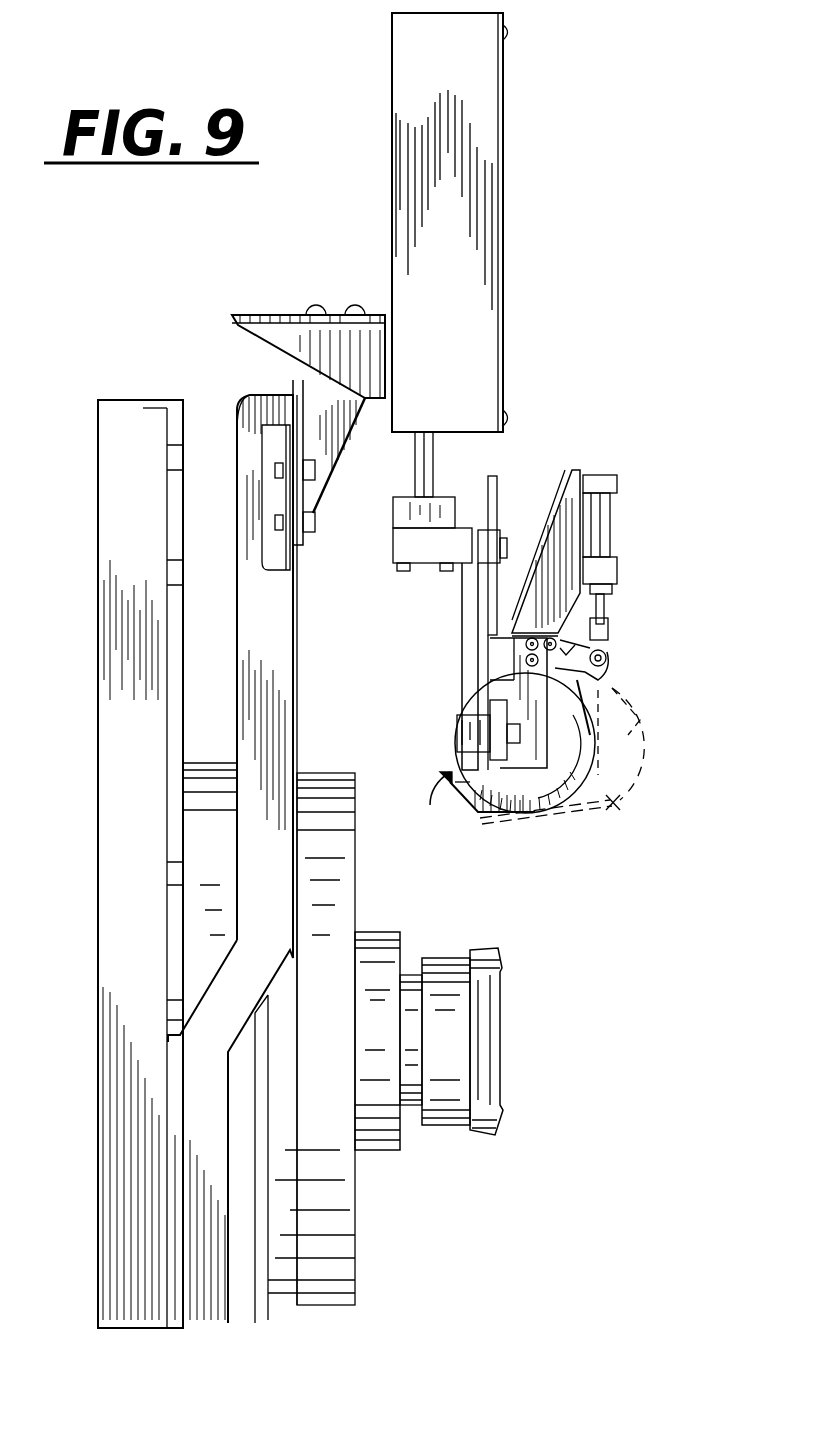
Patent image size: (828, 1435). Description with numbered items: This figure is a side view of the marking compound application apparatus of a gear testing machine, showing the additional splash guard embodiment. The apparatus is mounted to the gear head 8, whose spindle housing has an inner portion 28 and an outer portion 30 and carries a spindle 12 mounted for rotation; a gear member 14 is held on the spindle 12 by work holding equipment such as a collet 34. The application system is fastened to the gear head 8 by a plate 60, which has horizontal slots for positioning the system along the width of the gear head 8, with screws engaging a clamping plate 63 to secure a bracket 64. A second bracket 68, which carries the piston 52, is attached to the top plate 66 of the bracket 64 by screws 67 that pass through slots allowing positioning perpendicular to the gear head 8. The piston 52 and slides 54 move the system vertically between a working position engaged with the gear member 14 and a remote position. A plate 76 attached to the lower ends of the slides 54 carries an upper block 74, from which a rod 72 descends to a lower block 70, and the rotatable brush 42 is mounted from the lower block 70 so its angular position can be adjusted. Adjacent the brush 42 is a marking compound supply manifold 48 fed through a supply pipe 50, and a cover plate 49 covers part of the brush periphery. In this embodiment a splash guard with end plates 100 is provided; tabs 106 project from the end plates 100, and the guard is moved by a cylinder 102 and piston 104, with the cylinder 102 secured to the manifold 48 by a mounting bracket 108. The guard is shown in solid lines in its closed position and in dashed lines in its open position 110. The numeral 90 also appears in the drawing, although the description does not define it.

The gear head 8 is at (118, 527).
The spindle 12 is at (378, 1152).
The gear member 14 is at (503, 1085).
The inner portion 28 is at (210, 778).
The outer portion 30 is at (340, 778).
The collet 34 is at (447, 1125).
The rotatable brush 42 is at (430, 802).
The marking compound supply manifold 48 is at (445, 775).
The cover plate 49 is at (618, 803).
The supply pipe 50 is at (500, 494).
The piston 52 is at (483, 330).
The slides 54 is at (415, 468).
The plate 60 is at (290, 612).
The clamping plate 63 is at (266, 430).
The bracket 64 is at (315, 395).
The top plate 66 is at (285, 325).
The screws 67 is at (355, 318).
The bracket 68 is at (292, 318).
The lower block 70 is at (457, 735).
The rod 72 is at (462, 640).
The upper block 74 is at (393, 553).
The plate 76 is at (393, 514).
The rollers 90 is at (492, 698).
The end plates 100 is at (493, 795).
The cylinder 102 is at (603, 520).
The piston 104 is at (604, 606).
The tabs 106 is at (608, 678).
The mounting bracket 108 is at (567, 513).
The open position 110 is at (648, 716).